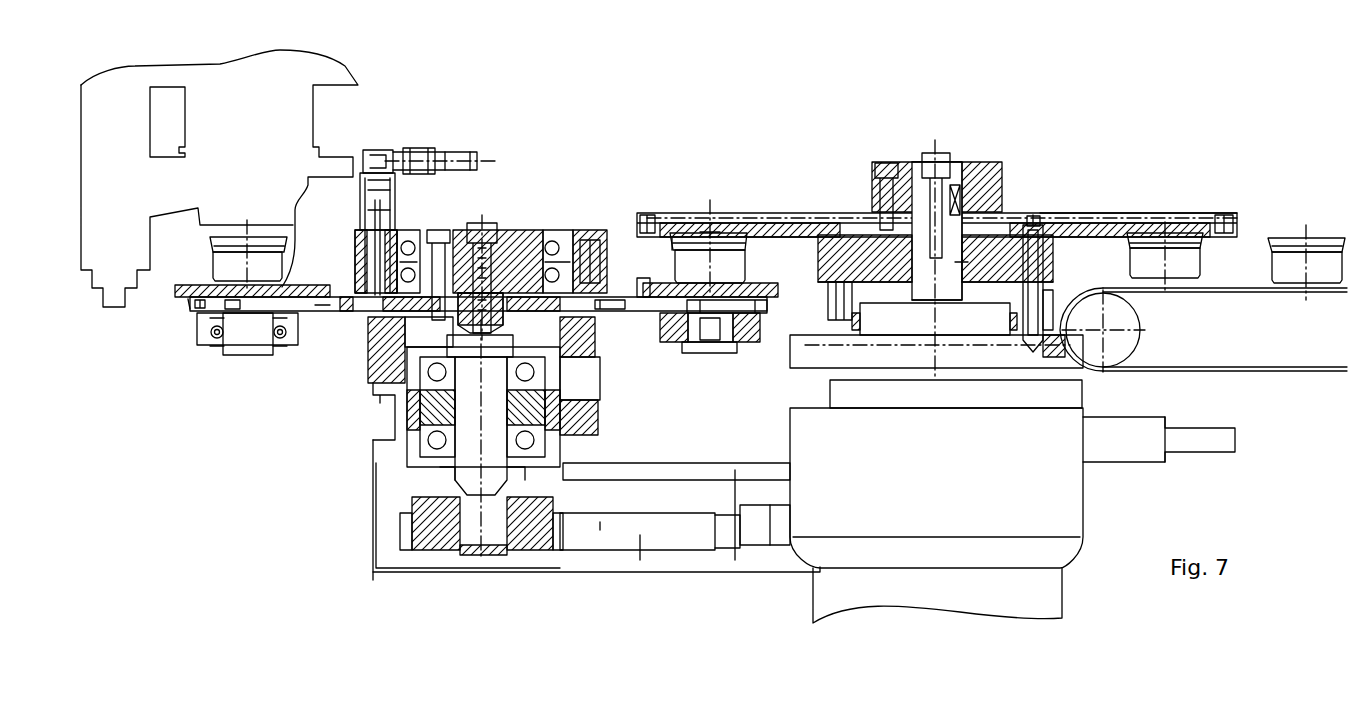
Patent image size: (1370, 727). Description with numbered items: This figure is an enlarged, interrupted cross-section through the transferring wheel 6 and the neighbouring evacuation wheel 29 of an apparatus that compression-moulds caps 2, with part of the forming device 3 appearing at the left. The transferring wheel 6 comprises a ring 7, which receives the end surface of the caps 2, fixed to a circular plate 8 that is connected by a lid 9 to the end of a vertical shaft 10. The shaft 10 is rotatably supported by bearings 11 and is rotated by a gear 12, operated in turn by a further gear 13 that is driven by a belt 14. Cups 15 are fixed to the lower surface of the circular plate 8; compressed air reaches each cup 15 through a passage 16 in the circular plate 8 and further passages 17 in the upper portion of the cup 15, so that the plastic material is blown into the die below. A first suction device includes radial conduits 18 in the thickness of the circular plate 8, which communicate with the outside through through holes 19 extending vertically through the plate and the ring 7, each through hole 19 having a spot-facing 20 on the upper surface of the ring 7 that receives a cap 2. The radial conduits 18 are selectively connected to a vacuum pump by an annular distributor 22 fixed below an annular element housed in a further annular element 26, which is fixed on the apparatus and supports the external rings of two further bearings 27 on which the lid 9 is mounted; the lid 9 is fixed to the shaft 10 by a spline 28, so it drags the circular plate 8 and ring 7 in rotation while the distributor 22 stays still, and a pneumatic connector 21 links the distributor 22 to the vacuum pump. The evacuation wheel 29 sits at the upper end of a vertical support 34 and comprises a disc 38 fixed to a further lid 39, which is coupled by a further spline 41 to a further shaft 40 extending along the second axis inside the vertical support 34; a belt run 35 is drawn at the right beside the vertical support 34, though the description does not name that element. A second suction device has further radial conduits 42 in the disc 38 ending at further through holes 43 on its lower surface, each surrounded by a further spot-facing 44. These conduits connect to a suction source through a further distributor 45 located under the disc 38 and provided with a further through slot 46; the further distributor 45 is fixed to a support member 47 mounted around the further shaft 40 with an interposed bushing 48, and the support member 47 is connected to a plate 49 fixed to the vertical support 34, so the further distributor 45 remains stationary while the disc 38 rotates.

The cap 2 is at (213, 263).
The forming device 3 is at (249, 150).
The transferring wheel 6 is at (537, 203).
The ring 7 is at (306, 286).
The circular plate 8 is at (626, 314).
The lid 9 is at (513, 230).
The shaft 10 is at (470, 455).
The bearings 11 is at (380, 418).
The gear 12 is at (425, 556).
The further gear 13 is at (603, 552).
The belt 14 is at (727, 490).
The cup 15 is at (197, 322).
The passage 16 is at (647, 305).
The further passages 17 is at (717, 314).
The radial conduits 18 is at (316, 306).
The through holes 19 is at (187, 300).
The spot-facing 20 is at (282, 287).
The pneumatic connector 21 is at (452, 150).
The distributor 22 is at (613, 260).
The further annular element 26 is at (595, 235).
The further bearings 27 is at (410, 238).
The spline 28 is at (540, 262).
The evacuation wheel 29 is at (1012, 175).
The vertical support 34 is at (1003, 608).
The belt 35 is at (1287, 370).
The disc 38 is at (1100, 213).
The further lid 39 is at (975, 162).
The further shaft 40 is at (920, 292).
The further spline 41 is at (985, 170).
The further radial conduits 42 is at (770, 225).
The further through holes 43 is at (710, 225).
The further spot-facing 44 is at (700, 240).
The further distributor 45 is at (822, 246).
The further through slot 46 is at (1040, 228).
The support member 47 is at (1053, 268).
The bushing 48 is at (965, 262).
The plate 49 is at (792, 350).